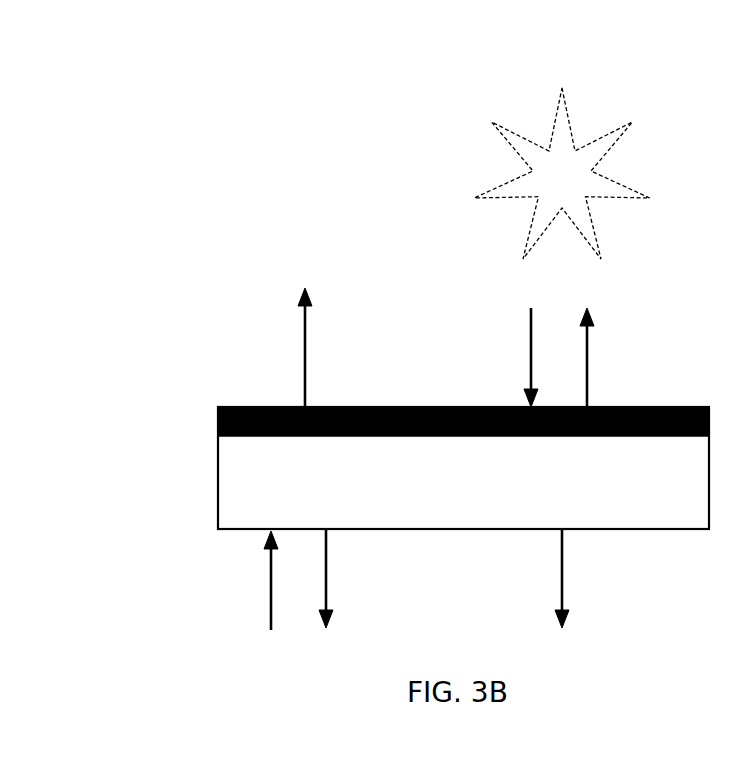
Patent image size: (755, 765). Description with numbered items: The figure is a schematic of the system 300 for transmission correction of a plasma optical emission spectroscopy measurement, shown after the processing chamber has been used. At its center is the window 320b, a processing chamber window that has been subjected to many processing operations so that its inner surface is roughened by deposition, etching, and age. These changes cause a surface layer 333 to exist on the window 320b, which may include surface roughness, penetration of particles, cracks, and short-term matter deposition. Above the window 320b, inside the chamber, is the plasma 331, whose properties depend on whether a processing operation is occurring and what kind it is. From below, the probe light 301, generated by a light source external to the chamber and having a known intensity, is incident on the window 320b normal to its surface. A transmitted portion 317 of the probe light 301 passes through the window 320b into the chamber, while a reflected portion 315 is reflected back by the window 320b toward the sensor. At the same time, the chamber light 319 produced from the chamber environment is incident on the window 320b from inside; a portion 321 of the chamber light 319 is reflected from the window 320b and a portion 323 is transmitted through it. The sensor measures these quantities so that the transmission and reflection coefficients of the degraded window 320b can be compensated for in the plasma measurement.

The system 300 is at (292, 69).
The probe light 301 is at (271, 577).
The reflected portion 315 is at (326, 565).
The transmitted portion 317 is at (305, 343).
The chamber light 319 is at (531, 378).
The window 320b is at (218, 455).
The reflected portion of chamber light 321 is at (587, 377).
The transmitted portion of chamber light 323 is at (562, 581).
The plasma 331 is at (494, 123).
The surface layer 333 is at (218, 407).